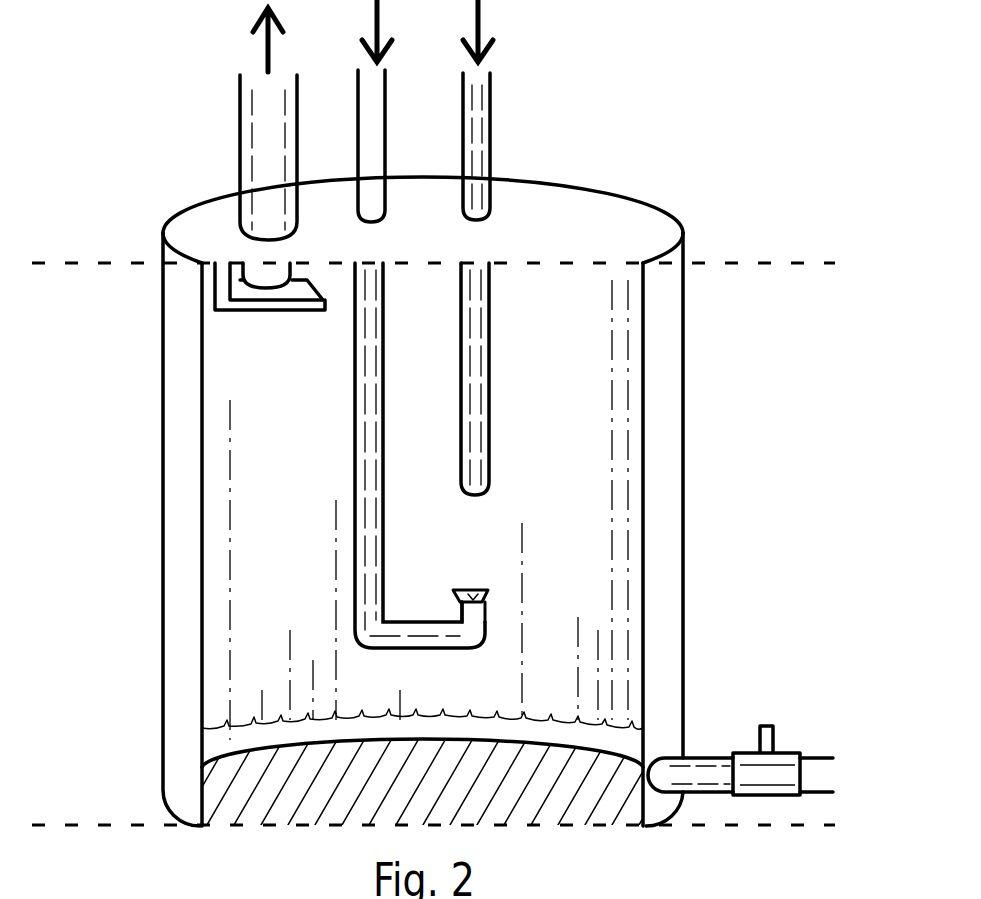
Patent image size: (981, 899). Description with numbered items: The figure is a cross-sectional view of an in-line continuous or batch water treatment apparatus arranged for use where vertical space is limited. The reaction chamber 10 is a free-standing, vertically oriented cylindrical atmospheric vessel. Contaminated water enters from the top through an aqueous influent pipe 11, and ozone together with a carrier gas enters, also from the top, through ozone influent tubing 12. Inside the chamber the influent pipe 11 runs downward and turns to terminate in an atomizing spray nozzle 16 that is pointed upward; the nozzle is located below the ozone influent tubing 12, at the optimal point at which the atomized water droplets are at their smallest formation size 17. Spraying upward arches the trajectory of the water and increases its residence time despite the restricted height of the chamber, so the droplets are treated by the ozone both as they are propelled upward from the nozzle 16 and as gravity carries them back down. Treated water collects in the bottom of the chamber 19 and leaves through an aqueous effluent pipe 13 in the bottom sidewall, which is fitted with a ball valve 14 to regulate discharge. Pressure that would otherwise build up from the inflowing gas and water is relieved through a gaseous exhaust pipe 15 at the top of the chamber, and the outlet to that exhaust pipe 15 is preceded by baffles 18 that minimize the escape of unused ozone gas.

The reaction chamber 10 is at (560, 200).
The aqueous influent pipe 11 is at (370, 82).
The ozone influent tubing 12 is at (470, 90).
The aqueous effluent pipe 13 is at (703, 770).
The ball valve 14 is at (773, 762).
The gaseous exhaust pipe 15 is at (262, 100).
The atomizing spray nozzle 16 is at (487, 590).
The point of smallest droplet formation size 17 is at (478, 498).
The baffles 18 is at (217, 287).
The bottom of the chamber 19 is at (227, 732).